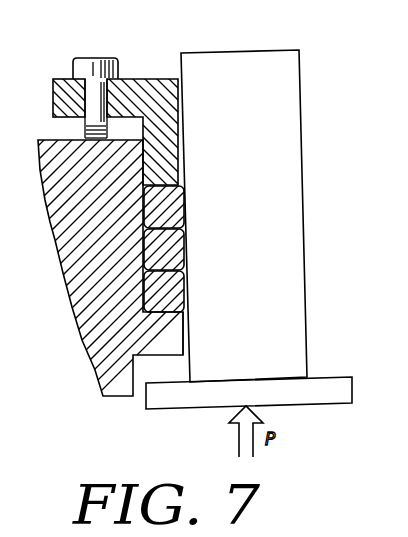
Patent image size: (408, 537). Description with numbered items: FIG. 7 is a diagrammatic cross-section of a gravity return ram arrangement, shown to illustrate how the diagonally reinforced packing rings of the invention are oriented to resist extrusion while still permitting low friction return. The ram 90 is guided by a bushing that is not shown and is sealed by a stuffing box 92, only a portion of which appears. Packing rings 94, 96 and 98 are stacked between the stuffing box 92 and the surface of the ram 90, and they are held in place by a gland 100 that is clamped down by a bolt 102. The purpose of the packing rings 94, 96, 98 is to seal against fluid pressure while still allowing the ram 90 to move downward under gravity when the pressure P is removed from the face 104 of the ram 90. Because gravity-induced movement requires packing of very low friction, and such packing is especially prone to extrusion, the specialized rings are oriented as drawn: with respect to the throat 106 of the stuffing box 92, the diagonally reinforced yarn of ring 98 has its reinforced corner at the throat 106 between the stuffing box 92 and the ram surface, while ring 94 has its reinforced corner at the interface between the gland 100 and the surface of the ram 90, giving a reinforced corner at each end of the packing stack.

The ram 90 is at (280, 108).
The stuffing box 92 is at (66, 309).
The packing ring 94 is at (177, 213).
The packing ring 96 is at (177, 243).
The packing ring 98 is at (177, 286).
The gland 100 is at (138, 80).
The bolt 102 is at (92, 58).
The face 104 is at (285, 407).
The throat 106 is at (197, 333).